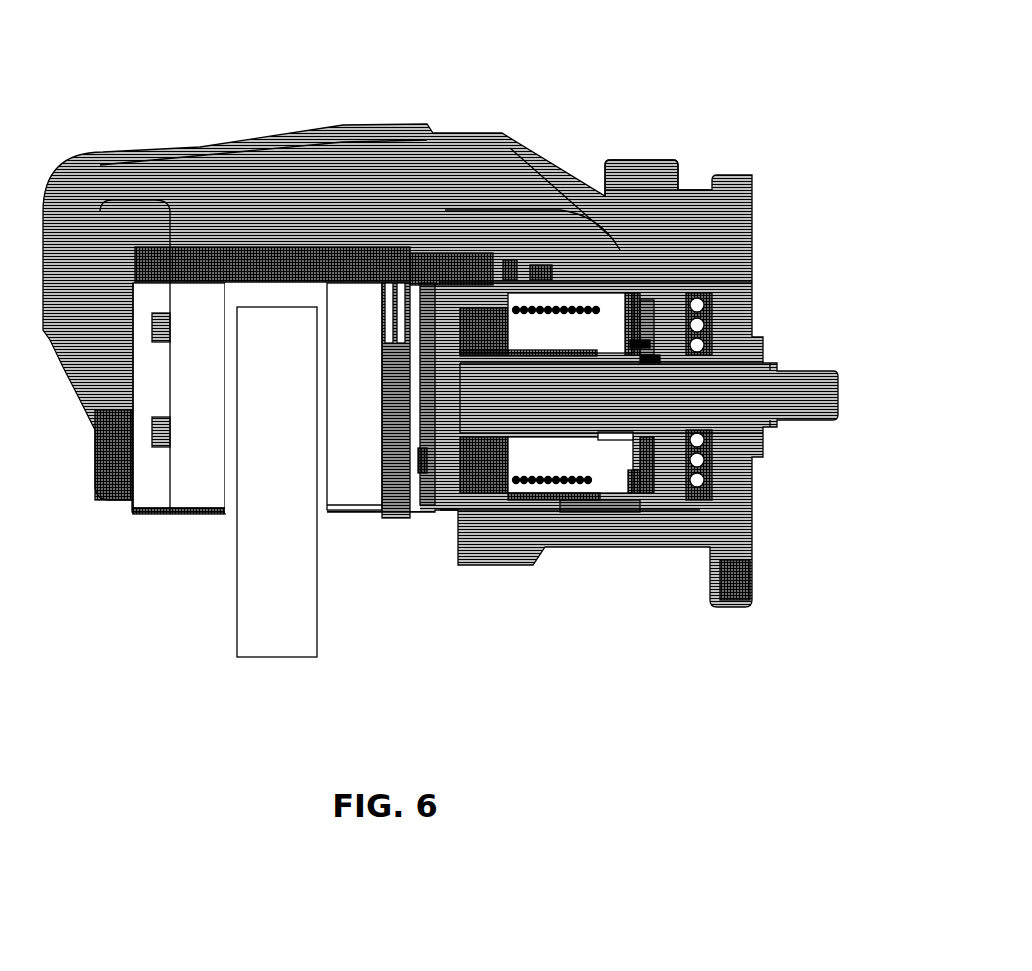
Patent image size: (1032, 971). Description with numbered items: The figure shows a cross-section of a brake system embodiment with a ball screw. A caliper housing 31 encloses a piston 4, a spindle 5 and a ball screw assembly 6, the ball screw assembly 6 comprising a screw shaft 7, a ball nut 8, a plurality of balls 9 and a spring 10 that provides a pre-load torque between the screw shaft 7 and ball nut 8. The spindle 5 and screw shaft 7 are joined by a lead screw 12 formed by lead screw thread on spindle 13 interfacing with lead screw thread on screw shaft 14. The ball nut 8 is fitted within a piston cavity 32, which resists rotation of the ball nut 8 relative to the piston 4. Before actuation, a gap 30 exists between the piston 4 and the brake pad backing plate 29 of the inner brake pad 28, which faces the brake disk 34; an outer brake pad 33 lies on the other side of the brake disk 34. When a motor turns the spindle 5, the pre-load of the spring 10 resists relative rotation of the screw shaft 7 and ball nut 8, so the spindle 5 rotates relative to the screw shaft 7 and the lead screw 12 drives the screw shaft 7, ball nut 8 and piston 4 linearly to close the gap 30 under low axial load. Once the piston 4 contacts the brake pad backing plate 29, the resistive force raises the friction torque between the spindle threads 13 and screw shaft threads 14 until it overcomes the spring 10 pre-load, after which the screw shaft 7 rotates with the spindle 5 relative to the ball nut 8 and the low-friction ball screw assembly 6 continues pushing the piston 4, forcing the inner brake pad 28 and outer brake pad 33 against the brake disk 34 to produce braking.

The piston 4 is at (683, 308).
The spindle 5 is at (798, 392).
The ball screw assembly 6 is at (613, 262).
The screw shaft 7 is at (517, 465).
The ball nut 8 is at (583, 507).
The balls 9 is at (543, 497).
The spring 10 is at (648, 468).
The lead screw 12 is at (632, 360).
The lead screw thread on spindle 13 is at (640, 344).
The lead screw thread on screw shaft 14 is at (650, 359).
The brake pad 28 is at (352, 498).
The brake pad backing plate 29 is at (393, 523).
The gap 30 is at (430, 503).
The caliper housing 31 is at (313, 150).
The piston cavity 32 is at (480, 333).
The outer brake pad 33 is at (170, 500).
The brake disk 34 is at (265, 618).